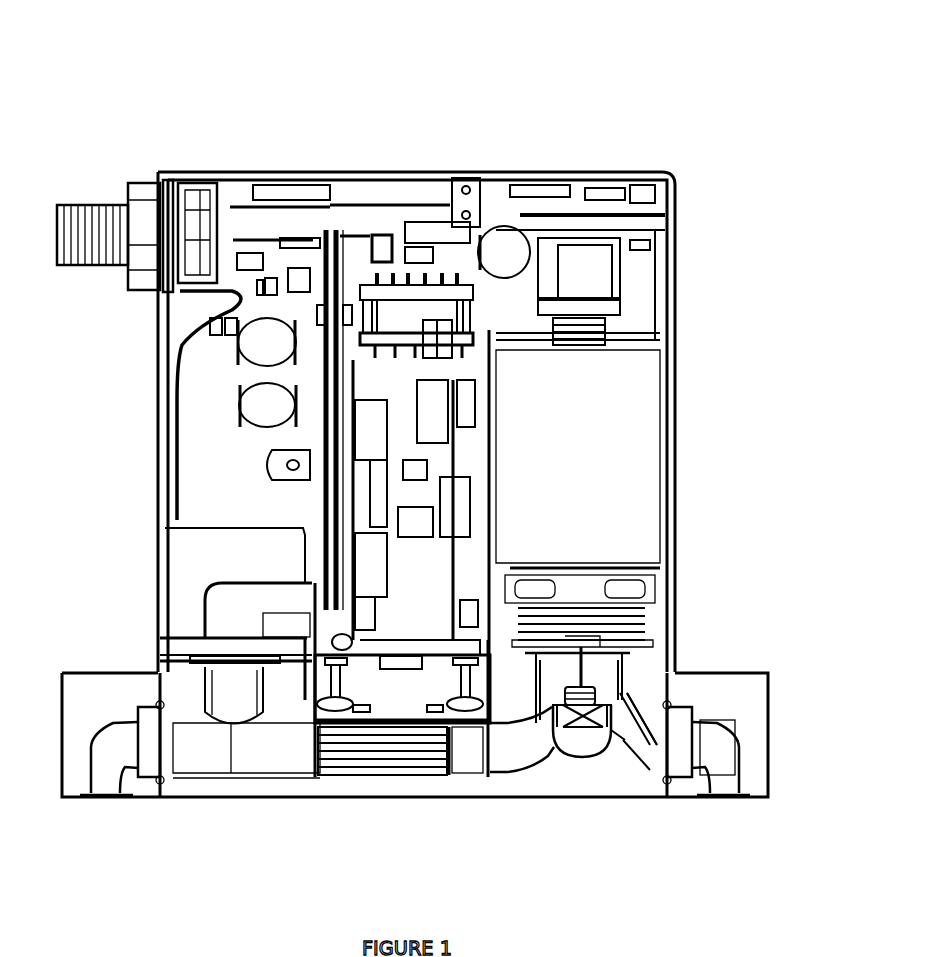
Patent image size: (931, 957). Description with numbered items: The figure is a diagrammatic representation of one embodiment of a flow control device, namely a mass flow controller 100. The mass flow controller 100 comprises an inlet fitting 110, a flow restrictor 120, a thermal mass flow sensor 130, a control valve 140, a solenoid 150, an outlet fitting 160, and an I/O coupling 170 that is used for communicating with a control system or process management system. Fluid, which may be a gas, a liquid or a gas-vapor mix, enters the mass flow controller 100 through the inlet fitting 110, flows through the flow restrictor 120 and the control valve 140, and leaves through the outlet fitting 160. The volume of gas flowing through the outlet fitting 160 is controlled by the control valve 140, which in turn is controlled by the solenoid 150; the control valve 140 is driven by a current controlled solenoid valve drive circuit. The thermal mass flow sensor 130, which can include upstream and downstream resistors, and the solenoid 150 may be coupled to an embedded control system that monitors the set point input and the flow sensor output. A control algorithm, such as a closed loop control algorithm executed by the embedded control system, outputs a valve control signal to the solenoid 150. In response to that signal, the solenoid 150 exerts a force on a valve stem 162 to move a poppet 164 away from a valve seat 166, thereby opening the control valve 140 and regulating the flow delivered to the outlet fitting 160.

The mass flow controller 100 is at (177, 88).
The inlet fitting 110 is at (103, 812).
The flow restrictor 120 is at (388, 772).
The thermal mass flow sensor 130 is at (399, 705).
The control valve 140 is at (605, 740).
The solenoid 150 is at (602, 482).
The outlet fitting 160 is at (740, 812).
The valve stem 162 is at (592, 668).
The poppet 164 is at (583, 733).
The valve seat 166 is at (558, 737).
The I/O coupling 170 is at (90, 197).